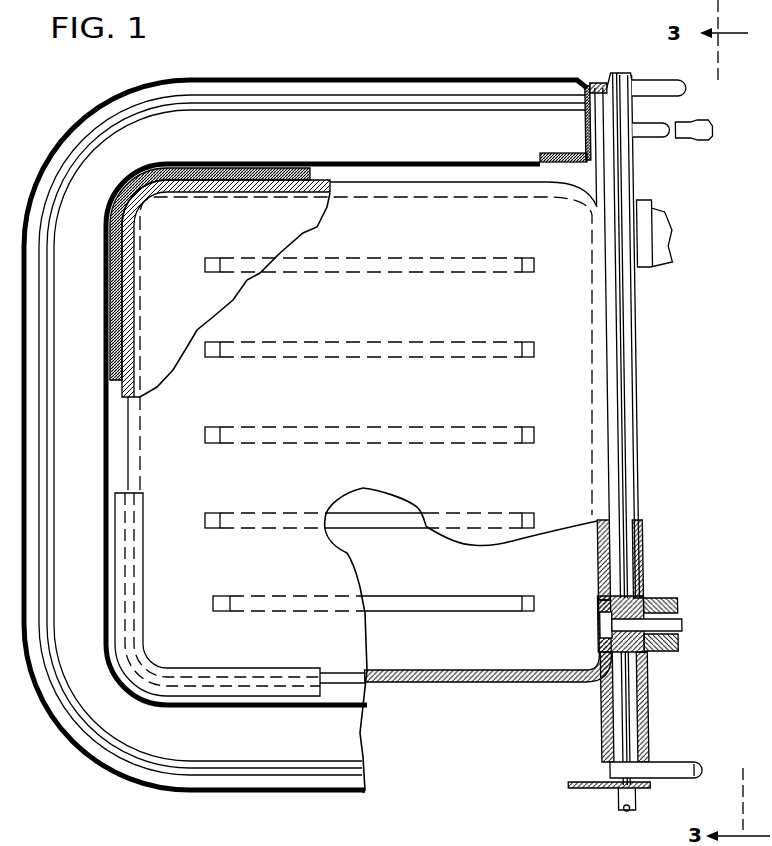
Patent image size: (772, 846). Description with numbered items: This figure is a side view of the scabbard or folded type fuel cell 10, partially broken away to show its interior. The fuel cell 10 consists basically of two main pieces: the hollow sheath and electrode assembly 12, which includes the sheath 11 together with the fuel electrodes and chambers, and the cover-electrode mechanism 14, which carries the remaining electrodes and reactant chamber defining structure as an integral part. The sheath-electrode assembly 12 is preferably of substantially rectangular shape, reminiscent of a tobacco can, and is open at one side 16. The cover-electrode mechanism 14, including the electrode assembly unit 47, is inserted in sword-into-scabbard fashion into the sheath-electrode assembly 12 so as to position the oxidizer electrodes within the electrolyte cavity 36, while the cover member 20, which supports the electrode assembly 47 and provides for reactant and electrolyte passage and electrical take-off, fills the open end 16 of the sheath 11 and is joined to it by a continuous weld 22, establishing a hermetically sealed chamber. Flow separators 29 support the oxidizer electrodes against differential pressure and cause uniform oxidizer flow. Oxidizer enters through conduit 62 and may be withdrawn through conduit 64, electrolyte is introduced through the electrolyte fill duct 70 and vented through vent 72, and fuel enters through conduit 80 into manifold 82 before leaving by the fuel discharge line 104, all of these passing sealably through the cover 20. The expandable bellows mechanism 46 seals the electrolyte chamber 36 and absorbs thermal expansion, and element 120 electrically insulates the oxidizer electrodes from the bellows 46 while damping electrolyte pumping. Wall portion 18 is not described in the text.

The fuel cell 10 is at (348, 60).
The sheath 11 is at (242, 78).
The hollow sheath and electrode assembly 12 is at (398, 77).
The cover-electrode mechanism 14 is at (648, 355).
The open side 16 is at (630, 73).
The casing inner wall 18 is at (463, 90).
The cover member 20 is at (634, 430).
The weld 22 is at (617, 75).
The flow separators 29 is at (222, 258).
The electrolyte chamber 36 is at (462, 173).
The expandable bellows mechanism 46 is at (110, 707).
The electrode assembly unit 47 is at (514, 190).
The oxidizer conduit 62 is at (650, 204).
The oxidizer conduit 64 is at (657, 597).
The electrolyte fill duct 70 is at (686, 127).
The vent 72 is at (612, 810).
The fuel conduit 80 is at (666, 86).
The manifold 82 is at (593, 78).
The fuel discharge line 104 is at (690, 765).
The insulating element 120 is at (111, 267).